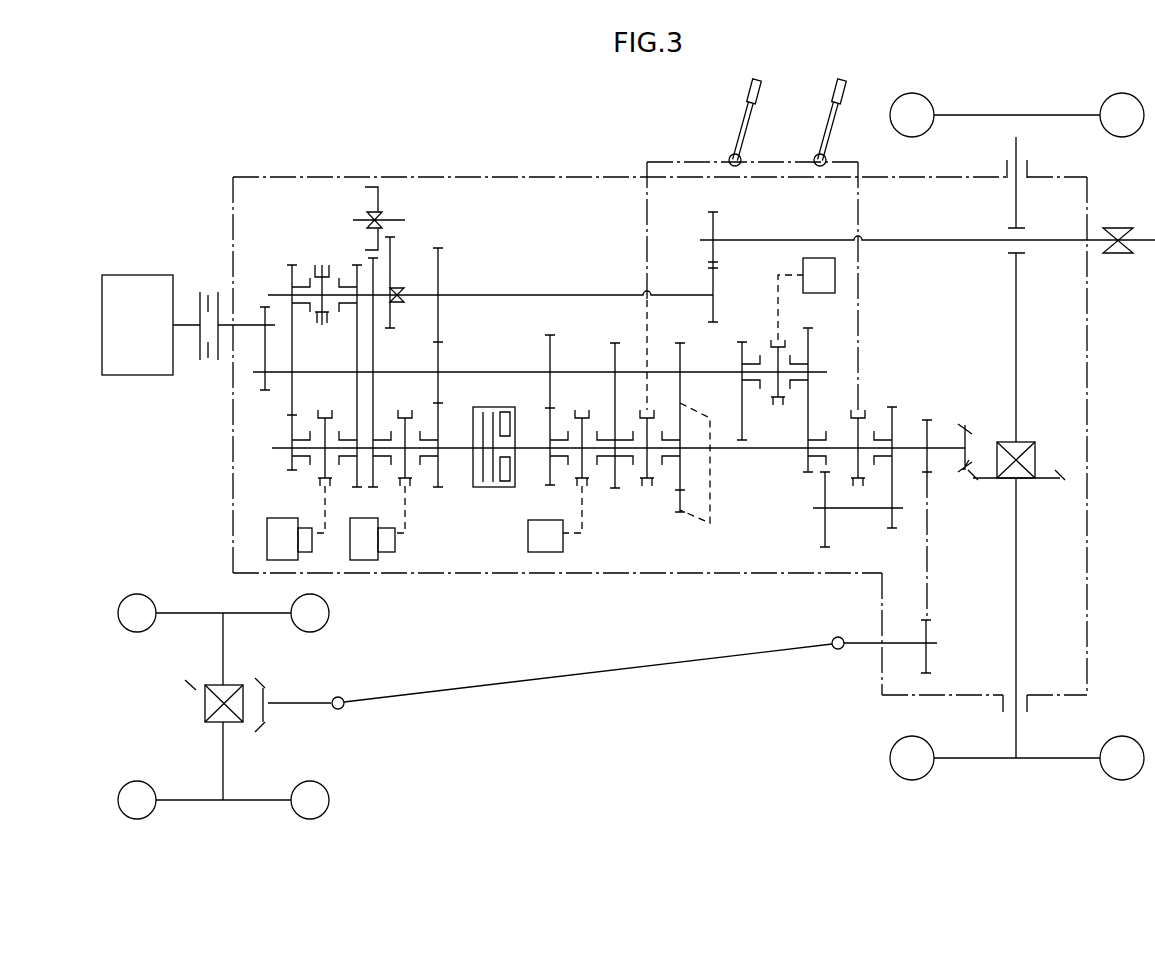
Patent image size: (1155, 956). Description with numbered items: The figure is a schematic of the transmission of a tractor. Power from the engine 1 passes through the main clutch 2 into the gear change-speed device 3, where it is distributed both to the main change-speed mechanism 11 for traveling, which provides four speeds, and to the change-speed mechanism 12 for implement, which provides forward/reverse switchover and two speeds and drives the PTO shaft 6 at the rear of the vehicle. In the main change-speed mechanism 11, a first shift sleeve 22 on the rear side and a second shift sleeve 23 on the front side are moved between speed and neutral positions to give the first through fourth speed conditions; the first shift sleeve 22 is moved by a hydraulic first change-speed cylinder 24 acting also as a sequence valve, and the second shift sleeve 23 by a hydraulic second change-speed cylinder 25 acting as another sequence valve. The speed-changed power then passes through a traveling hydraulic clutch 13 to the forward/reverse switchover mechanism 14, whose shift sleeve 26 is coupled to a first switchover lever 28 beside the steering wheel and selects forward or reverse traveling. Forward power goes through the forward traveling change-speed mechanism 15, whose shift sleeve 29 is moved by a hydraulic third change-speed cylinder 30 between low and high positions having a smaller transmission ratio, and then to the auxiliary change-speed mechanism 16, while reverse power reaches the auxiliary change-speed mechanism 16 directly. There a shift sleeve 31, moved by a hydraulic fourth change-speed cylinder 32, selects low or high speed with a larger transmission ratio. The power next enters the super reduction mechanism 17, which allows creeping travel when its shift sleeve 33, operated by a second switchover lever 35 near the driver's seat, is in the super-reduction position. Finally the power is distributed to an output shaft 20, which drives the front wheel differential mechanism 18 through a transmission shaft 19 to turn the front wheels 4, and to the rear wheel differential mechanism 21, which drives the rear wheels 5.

The engine 1 is at (136, 274).
The main clutch 2 is at (209, 372).
The gear change-speed device 3 is at (503, 176).
The front wheels 4 is at (130, 603).
The rear wheels 5 is at (1127, 133).
The PTO shaft 6 is at (1147, 245).
The main change-speed mechanism 11 is at (273, 429).
The change-speed mechanism for implement 12 is at (300, 250).
The traveling hydraulic clutch 13 is at (480, 407).
The forward/reverse switchover mechanism 14 is at (655, 488).
The forward traveling change-speed mechanism 15 is at (590, 488).
The auxiliary change-speed mechanism 16 is at (758, 322).
The super reduction mechanism 17 is at (875, 403).
The front wheel differential mechanism 18 is at (207, 703).
The transmission shaft 19 is at (608, 668).
The output shaft 20 is at (865, 645).
The rear wheel differential mechanism 21 is at (1028, 442).
The first shift sleeve 22 is at (405, 418).
The second shift sleeve 23 is at (325, 418).
The first change-speed cylinder 24 is at (367, 557).
The second change-speed cylinder 25 is at (268, 541).
The shift sleeve 26 is at (653, 408).
The first switchover lever 28 is at (743, 127).
The shift sleeve 29 is at (583, 418).
The third change-speed cylinder 30 is at (547, 541).
The shift sleeve 31 is at (775, 400).
The fourth change-speed cylinder 32 is at (823, 284).
The shift sleeve 33 is at (855, 473).
The second switchover lever 35 is at (828, 128).